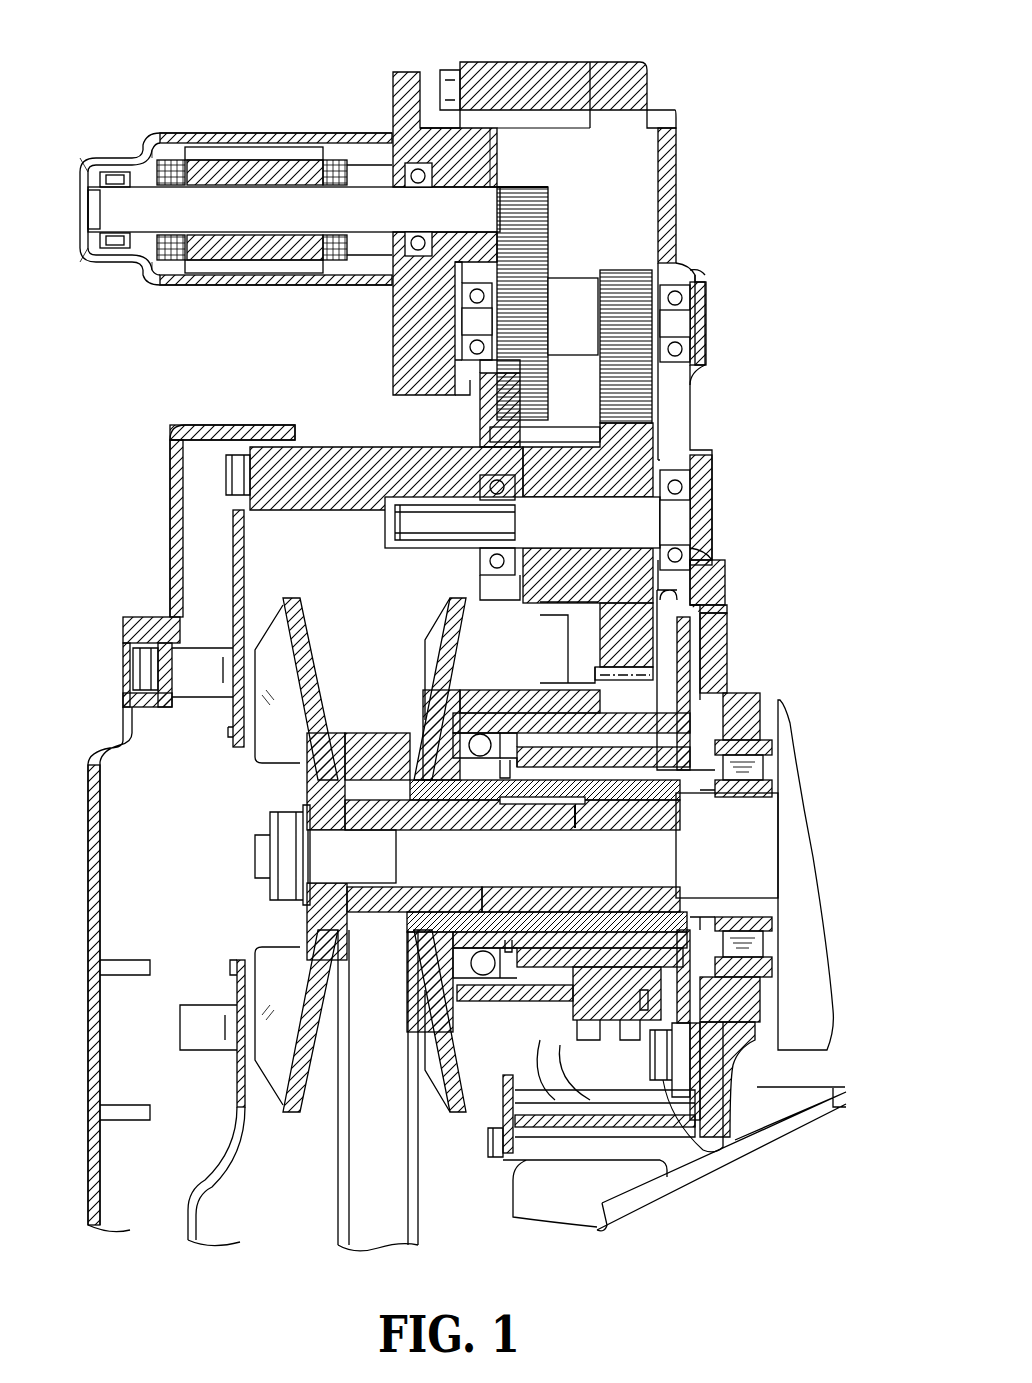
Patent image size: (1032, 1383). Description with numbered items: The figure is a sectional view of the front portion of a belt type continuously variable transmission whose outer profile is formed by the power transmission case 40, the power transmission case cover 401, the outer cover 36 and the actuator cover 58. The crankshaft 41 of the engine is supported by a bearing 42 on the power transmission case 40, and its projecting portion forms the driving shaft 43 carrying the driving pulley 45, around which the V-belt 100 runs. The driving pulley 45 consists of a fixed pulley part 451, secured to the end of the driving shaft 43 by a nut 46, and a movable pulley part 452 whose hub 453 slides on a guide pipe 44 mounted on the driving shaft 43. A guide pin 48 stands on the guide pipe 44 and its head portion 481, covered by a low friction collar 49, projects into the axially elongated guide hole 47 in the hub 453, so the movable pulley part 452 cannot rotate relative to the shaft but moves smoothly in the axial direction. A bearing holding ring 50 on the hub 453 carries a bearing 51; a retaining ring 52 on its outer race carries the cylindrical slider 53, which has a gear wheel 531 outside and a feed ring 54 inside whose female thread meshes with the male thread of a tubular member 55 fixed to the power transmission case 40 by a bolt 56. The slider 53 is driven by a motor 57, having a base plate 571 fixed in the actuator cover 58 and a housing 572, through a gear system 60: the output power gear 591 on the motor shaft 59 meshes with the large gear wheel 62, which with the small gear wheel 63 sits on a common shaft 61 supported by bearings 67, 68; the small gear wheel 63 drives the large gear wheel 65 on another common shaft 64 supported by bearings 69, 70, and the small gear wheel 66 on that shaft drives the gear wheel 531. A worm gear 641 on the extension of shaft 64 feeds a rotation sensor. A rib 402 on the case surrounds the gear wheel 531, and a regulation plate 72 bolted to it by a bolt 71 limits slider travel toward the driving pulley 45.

The outer cover 36 is at (97, 1055).
The power transmission case 40 is at (531, 910).
The power transmission case cover 401 is at (240, 1115).
The rib 402 is at (597, 1160).
The crankshaft 41 is at (747, 884).
The bearing 42 is at (747, 770).
The driving shaft 43 is at (356, 872).
The guide pipe 44 is at (380, 905).
The driving pulley 45 is at (302, 834).
The fixed pulley part 451 is at (312, 757).
The movable pulley part 452 is at (415, 735).
The hub 453 is at (312, 785).
The nut 46 is at (282, 885).
The guide hole 47 is at (615, 830).
The guide pin 48 is at (512, 854).
The head portion 481 is at (518, 825).
The collar 49 is at (578, 828).
The bearing holding ring 50 is at (780, 900).
The bearing 51 is at (472, 1008).
The retaining ring 52 is at (527, 720).
The slider 53 is at (482, 695).
The gear wheel 531 is at (555, 1092).
The feed ring 54 is at (662, 1050).
The tubular member 55 is at (665, 722).
The bolt 56 is at (703, 1140).
The motor 57 is at (205, 120).
The base plate 571 is at (395, 322).
The housing 572 is at (172, 287).
The actuator cover 58 is at (515, 75).
The motor shaft 59 is at (380, 200).
The output power gear 591 is at (500, 190).
The gear system 60 is at (618, 212).
The common shaft 61 is at (672, 325).
The large gear wheel 62 is at (520, 305).
The small gear wheel 63 is at (625, 300).
The common shaft 64 is at (625, 525).
The worm gear 641 is at (410, 520).
The large gear wheel 65 is at (630, 455).
The small gear wheel 66 is at (555, 437).
The bearing 67 is at (690, 292).
The bearing 68 is at (458, 400).
The bearing 69 is at (705, 563).
The bearing 70 is at (490, 568).
The bolt 71 is at (487, 1145).
The regulation plate 72 is at (503, 1118).
The V-belt 100 is at (362, 1210).